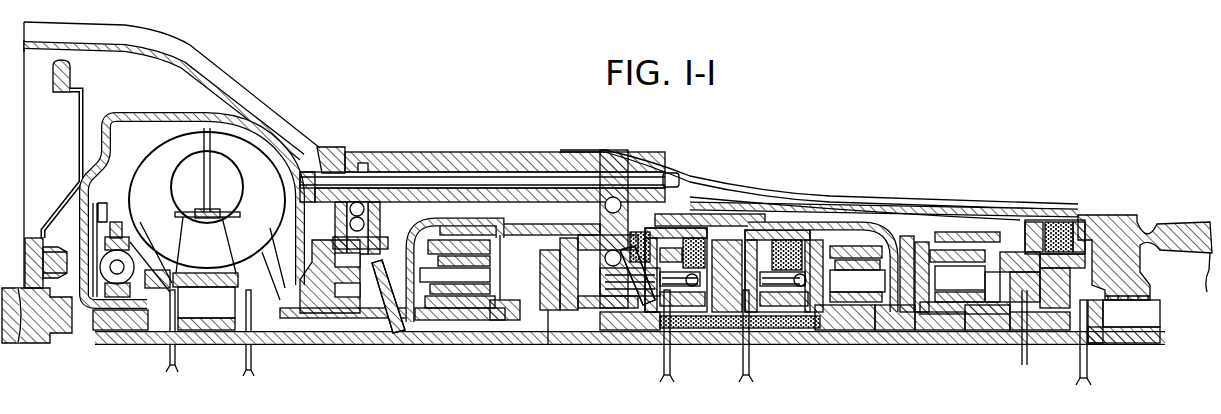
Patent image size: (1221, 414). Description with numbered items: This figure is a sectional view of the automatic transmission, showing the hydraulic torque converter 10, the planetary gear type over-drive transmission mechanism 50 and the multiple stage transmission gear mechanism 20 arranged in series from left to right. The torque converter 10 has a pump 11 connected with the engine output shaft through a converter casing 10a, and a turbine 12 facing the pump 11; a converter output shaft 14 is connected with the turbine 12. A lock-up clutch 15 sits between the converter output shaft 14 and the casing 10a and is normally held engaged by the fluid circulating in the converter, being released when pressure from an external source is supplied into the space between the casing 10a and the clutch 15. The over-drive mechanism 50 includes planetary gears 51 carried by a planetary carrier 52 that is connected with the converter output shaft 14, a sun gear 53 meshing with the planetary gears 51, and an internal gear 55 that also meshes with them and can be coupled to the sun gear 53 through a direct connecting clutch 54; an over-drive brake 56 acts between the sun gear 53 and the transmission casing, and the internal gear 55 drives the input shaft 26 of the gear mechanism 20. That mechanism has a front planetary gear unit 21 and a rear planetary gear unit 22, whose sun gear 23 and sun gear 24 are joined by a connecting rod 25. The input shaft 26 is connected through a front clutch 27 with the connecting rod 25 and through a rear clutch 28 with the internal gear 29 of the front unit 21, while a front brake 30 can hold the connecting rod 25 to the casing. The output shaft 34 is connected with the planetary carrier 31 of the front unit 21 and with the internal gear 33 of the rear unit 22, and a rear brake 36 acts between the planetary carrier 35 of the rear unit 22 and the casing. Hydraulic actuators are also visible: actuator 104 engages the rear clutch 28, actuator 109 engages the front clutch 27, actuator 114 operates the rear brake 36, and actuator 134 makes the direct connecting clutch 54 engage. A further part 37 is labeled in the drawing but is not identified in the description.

The hydraulic torque converter 10 is at (268, 168).
The converter casing 10a is at (232, 125).
The pump 11 is at (318, 148).
The turbine 12 is at (150, 175).
The converter output shaft 14 is at (120, 344).
The lock-up clutch 15 is at (76, 165).
The multiple stage transmission gear mechanism 20 is at (836, 208).
The front planetary gear unit 21 is at (868, 230).
The rear planetary gear unit 22 is at (968, 234).
The sun gear 23 is at (878, 340).
The sun gear 24 is at (975, 340).
The connecting rod 25 is at (918, 340).
The input shaft 26 is at (718, 345).
The front clutch 27 is at (695, 230).
The rear clutch 28 is at (815, 238).
The internal gear 29 is at (908, 258).
The front brake 30 is at (735, 214).
The planetary carrier 31 is at (828, 340).
The internal gear 33 is at (988, 262).
The output shaft 34 is at (990, 345).
The planetary carrier 35 is at (922, 232).
The rear brake 36 is at (1060, 222).
The bearing 37 is at (1025, 345).
The planetary gear type over-drive transmission mechanism 50 is at (485, 206).
The planetary gears 51 is at (432, 238).
The planetary carrier 52 is at (482, 320).
The sun gear 53 is at (420, 318).
The direct connecting clutch 54 is at (545, 232).
The internal gear 55 is at (448, 248).
The over-drive brake 56 is at (520, 222).
The hydraulic actuator 104 is at (778, 340).
The actuator 109 is at (670, 345).
The actuator 114 is at (1090, 345).
The actuator 134 is at (545, 345).